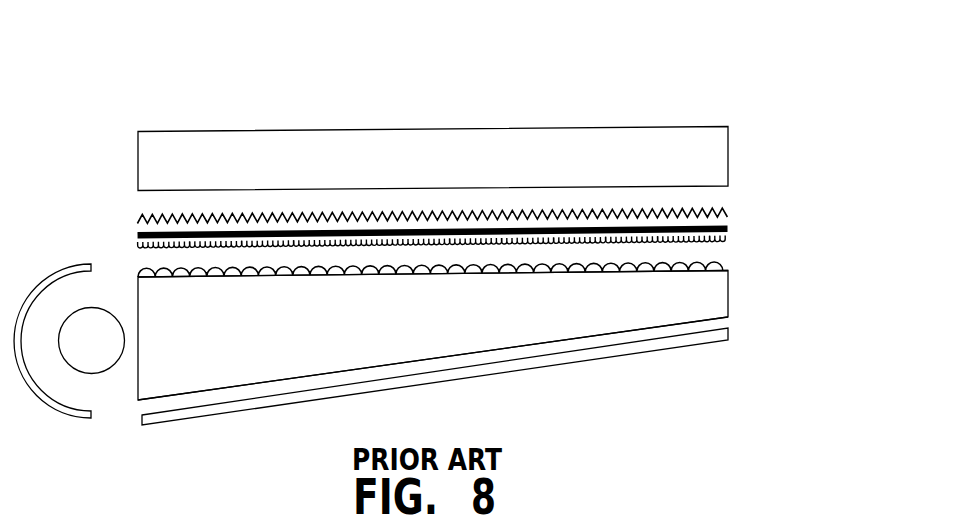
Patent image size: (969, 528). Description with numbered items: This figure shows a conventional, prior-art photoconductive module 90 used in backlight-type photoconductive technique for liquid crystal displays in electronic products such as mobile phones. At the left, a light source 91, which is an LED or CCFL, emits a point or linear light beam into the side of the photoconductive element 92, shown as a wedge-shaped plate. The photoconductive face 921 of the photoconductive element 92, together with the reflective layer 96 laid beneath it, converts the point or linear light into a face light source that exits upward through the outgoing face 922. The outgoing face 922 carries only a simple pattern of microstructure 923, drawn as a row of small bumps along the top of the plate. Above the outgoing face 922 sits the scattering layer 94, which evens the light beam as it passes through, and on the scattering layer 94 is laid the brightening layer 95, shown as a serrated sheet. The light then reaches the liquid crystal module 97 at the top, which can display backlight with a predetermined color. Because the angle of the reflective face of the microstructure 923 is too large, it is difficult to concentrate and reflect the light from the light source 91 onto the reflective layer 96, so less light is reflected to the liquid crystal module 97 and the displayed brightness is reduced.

The photoconductive module 90 is at (755, 287).
The light source 91 is at (105, 358).
The photoconductive element 92 is at (730, 300).
The photoconductive face 921 is at (437, 362).
The outgoing face 922 is at (153, 265).
The microstructure 923 is at (236, 266).
The scattering layer 94 is at (729, 228).
The brightening layer 95 is at (728, 214).
The reflective layer 96 is at (527, 366).
The liquid crystal module 97 is at (700, 145).